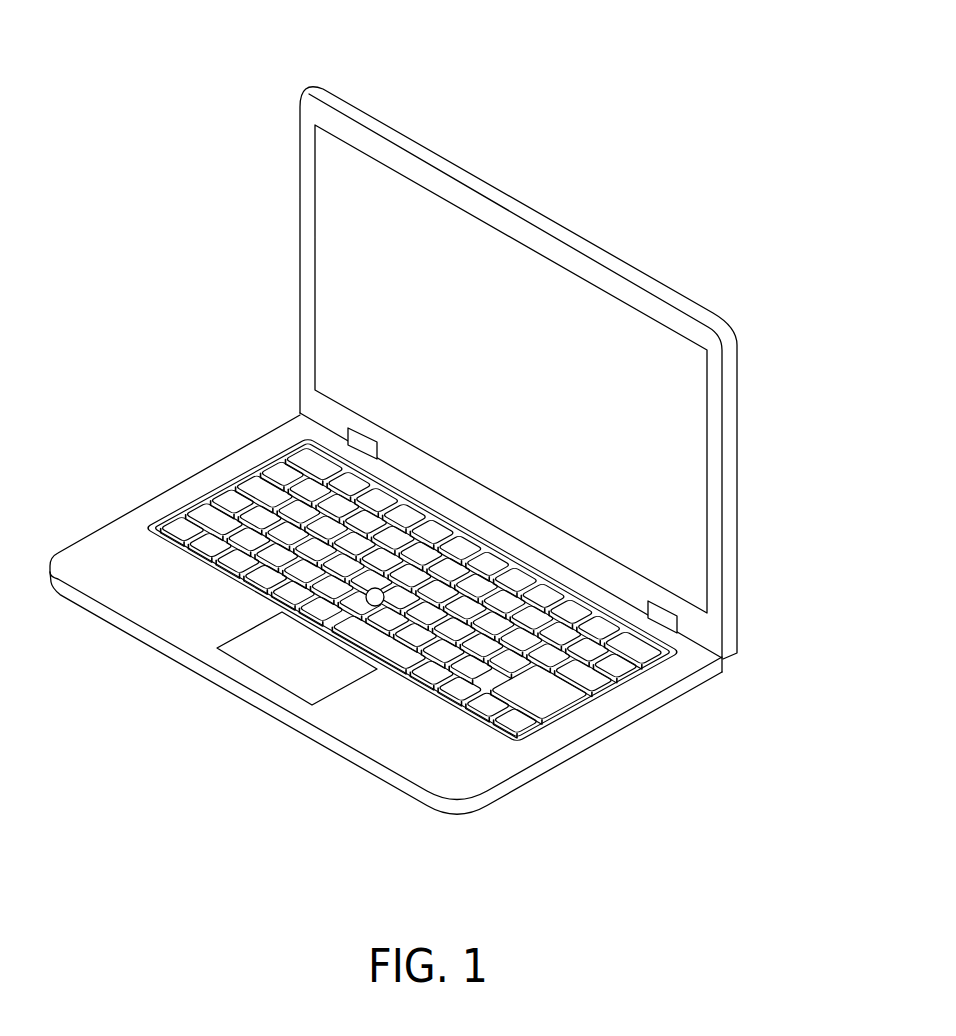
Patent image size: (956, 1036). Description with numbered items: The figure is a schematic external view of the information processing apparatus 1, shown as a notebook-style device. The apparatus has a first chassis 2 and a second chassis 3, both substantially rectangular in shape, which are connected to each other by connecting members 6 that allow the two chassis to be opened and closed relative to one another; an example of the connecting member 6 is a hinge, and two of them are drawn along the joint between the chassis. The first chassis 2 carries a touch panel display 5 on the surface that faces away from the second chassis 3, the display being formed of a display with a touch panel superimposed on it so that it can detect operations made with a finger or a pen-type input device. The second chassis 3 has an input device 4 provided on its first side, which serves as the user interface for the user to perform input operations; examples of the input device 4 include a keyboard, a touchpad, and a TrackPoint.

The information processing apparatus 1 is at (438, 414).
The first chassis 2 is at (530, 379).
The second chassis 3 is at (386, 614).
The input device 4 is at (169, 488).
The touch panel display 5 is at (337, 279).
The connecting member 6 is at (358, 433).